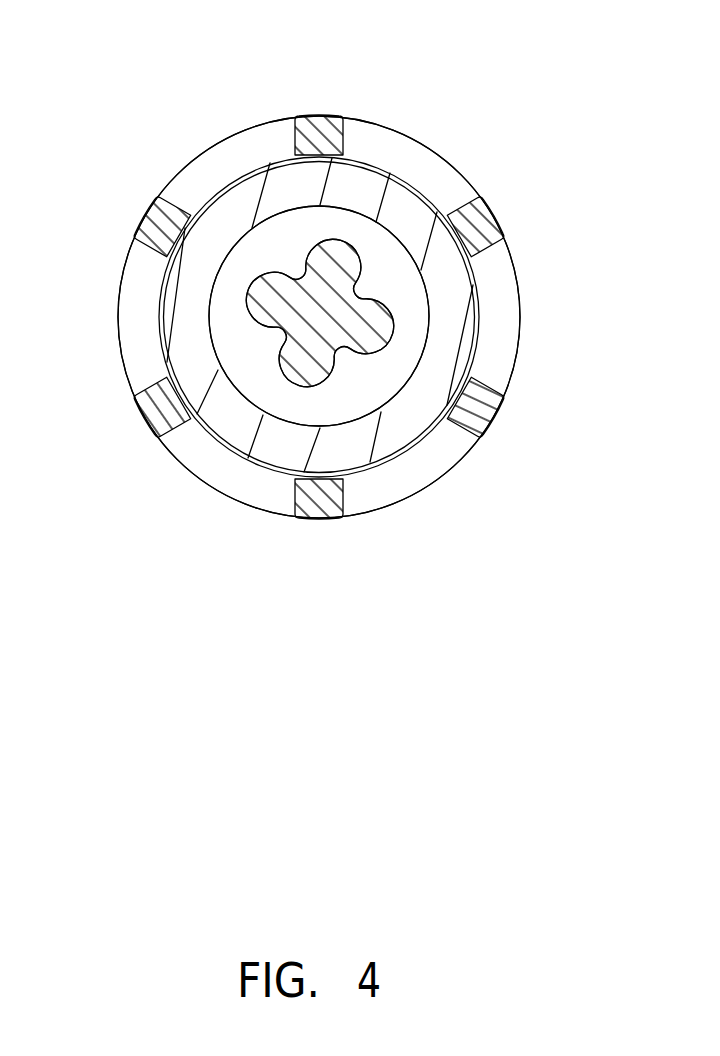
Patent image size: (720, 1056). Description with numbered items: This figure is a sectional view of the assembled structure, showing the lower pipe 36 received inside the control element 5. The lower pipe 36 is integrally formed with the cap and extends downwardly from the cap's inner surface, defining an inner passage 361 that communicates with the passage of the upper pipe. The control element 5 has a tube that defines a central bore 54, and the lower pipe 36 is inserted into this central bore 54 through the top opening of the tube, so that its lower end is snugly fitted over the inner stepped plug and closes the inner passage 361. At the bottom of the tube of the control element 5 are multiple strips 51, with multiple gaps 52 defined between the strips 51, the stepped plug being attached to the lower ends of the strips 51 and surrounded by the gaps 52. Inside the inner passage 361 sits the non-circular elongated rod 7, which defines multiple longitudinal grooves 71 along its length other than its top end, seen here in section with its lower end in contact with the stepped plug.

The control element 5 is at (448, 472).
The strips 51 is at (163, 411).
The gaps 52 is at (233, 485).
The central bore 54 is at (436, 200).
The lower pipe 36 is at (405, 430).
The inner passage 361 is at (398, 365).
The elongated rod 7 is at (333, 278).
The longitudinal grooves 71 is at (368, 297).